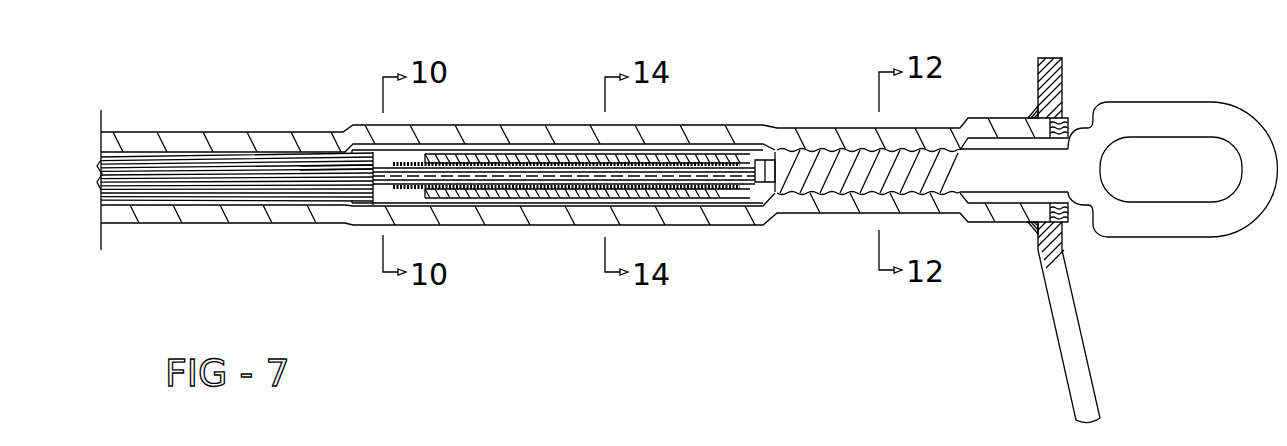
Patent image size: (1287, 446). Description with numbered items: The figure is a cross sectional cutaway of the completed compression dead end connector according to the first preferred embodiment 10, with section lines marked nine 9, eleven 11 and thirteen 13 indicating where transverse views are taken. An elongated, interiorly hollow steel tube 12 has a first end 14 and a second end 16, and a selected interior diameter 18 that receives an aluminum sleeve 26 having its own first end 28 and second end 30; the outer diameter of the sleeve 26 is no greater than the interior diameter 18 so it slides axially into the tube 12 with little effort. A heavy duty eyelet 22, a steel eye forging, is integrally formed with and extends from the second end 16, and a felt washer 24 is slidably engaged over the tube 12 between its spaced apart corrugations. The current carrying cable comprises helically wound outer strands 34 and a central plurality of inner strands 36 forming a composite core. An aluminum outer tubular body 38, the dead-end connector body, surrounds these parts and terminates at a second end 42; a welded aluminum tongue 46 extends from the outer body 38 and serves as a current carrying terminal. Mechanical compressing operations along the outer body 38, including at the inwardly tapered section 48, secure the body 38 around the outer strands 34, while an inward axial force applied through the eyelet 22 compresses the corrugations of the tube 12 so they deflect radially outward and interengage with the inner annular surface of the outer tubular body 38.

The section line 9- 9 is at (153, 117).
The first preferred embodiment 10 is at (349, 42).
The section line 11- 11 is at (788, 112).
The tube 12 is at (655, 157).
The section line 13- 13 is at (980, 110).
The first end 14 is at (420, 160).
The second end 16 is at (1073, 130).
The interior diameter 18 is at (497, 170).
The eyelet 22 is at (1178, 117).
The felt washer 24 is at (1042, 128).
The aluminum sleeve 26 is at (522, 192).
The first end 28 is at (397, 190).
The second end 30 is at (741, 187).
The outer strands 34 is at (310, 168).
The inner strands 36 is at (713, 158).
The outer tubular body 38 is at (465, 126).
The second end 42 is at (1035, 112).
The tongue 46 is at (1068, 300).
The inwardly tapered section 48 is at (238, 138).